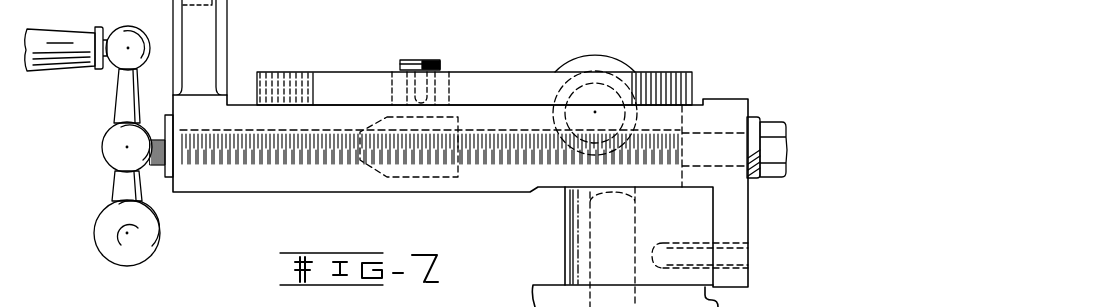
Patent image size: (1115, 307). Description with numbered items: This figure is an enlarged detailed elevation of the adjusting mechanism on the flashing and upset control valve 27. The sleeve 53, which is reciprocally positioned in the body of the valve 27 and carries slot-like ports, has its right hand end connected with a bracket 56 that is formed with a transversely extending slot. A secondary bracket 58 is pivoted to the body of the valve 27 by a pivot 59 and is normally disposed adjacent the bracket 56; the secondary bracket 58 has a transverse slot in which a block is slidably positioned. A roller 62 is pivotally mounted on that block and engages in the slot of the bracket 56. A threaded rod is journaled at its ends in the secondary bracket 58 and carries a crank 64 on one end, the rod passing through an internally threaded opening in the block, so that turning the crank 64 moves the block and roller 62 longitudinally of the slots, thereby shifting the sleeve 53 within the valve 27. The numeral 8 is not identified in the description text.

The micrometer adjusting mechanism 8 is at (801, 6).
The flashing and upset control valve 27 is at (654, 296).
The sleeve 53 is at (637, 69).
The bracket 56 is at (510, 73).
The secondary bracket 58 is at (288, 183).
The pivot 59 is at (565, 212).
The roller 62 is at (155, 177).
The crank 64 is at (45, 38).